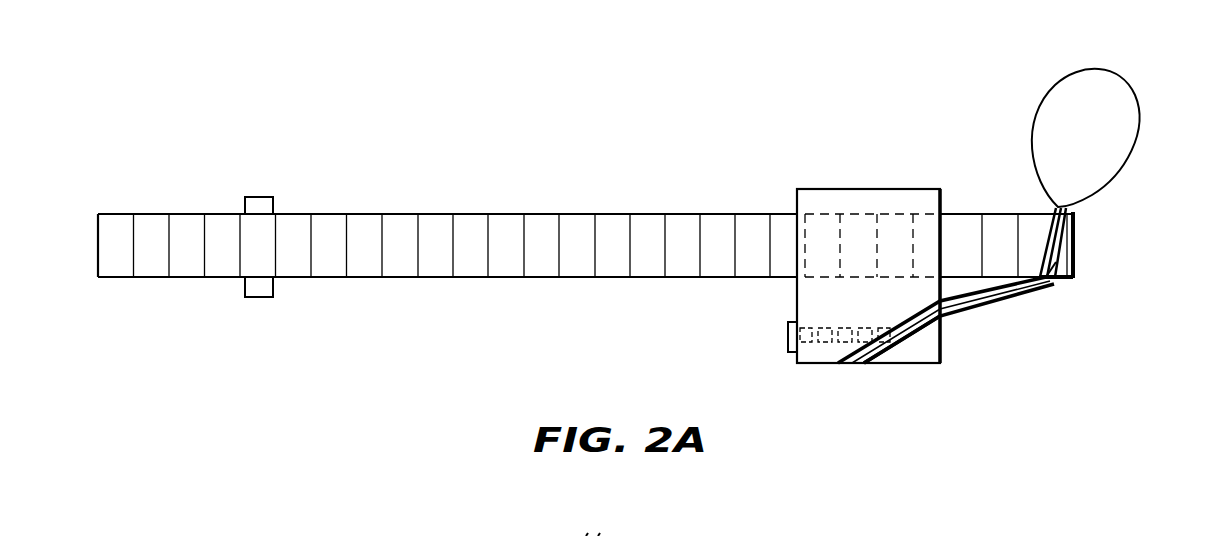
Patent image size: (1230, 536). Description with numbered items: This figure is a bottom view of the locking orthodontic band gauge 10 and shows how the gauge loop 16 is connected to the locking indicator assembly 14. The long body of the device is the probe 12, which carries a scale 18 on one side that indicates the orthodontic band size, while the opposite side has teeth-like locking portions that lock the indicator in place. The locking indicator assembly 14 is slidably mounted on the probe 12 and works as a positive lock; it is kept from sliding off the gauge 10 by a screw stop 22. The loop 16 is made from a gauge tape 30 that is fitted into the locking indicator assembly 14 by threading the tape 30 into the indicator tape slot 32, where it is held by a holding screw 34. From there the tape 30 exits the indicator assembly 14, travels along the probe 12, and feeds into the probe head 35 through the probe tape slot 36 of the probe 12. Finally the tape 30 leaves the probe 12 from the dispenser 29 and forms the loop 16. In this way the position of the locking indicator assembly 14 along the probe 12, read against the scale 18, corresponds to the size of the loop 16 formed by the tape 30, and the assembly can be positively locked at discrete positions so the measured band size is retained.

The gauge 10 is at (608, 192).
The probe 12 is at (395, 214).
The locking indicator assembly 14 is at (858, 188).
The gauge loop 16 is at (1138, 148).
The scale 18 is at (453, 268).
The screw stop 22 is at (260, 203).
The dispenser 29 is at (1066, 208).
The gauge tape 30 is at (973, 300).
The indicator tape slot 32 is at (890, 343).
The holding screw 34 is at (787, 338).
The probe head 35 is at (1070, 243).
The probe tape slot 36 is at (1050, 268).